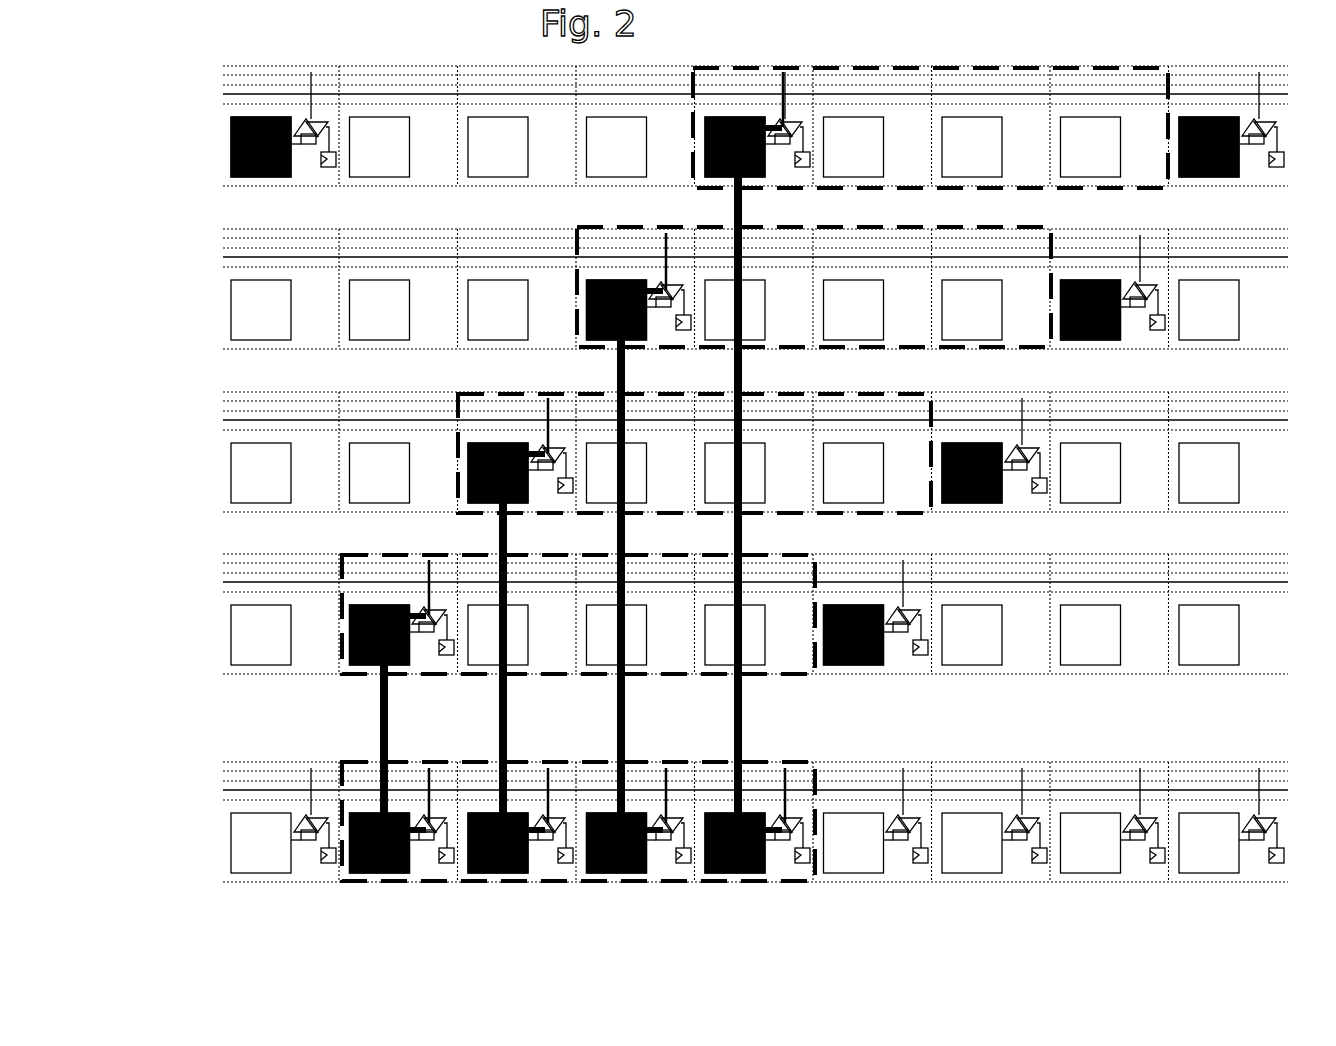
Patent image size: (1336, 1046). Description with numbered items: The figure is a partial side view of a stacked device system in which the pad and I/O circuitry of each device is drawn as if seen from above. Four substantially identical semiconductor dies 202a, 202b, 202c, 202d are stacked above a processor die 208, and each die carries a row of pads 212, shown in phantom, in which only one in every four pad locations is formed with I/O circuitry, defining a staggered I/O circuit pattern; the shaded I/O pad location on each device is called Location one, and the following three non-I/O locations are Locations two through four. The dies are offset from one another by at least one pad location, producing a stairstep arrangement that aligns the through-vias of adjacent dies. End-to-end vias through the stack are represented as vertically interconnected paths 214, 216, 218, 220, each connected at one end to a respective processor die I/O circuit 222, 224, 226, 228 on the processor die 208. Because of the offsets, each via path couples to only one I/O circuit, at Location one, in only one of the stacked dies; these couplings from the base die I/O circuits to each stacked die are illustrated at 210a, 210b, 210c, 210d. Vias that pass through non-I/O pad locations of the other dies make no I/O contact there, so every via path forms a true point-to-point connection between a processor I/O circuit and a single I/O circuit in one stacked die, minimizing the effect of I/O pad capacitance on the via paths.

The semiconductor die 202a is at (706, 604).
The semiconductor die 202b is at (704, 438).
The semiconductor die 202c is at (704, 272).
The semiconductor die 202d is at (702, 98).
The processor die 208 is at (710, 844).
The coupling to stacked die Location 1 210a is at (348, 655).
The coupling to stacked die Location 1 210b is at (467, 493).
The coupling to stacked die Location 1 210c is at (586, 325).
The coupling to stacked die Location 1 210d is at (705, 160).
The row of pads 212 is at (990, 65).
The vertically interconnected path 214 is at (380, 687).
The vertically interconnected path 216 is at (499, 687).
The vertically interconnected path 218 is at (617, 687).
The vertically interconnected path 220 is at (734, 687).
The processor die I/O circuit 222 is at (423, 862).
The processor die I/O circuit 224 is at (541, 862).
The processor die I/O circuit 226 is at (660, 862).
The processor die I/O circuit 228 is at (782, 862).